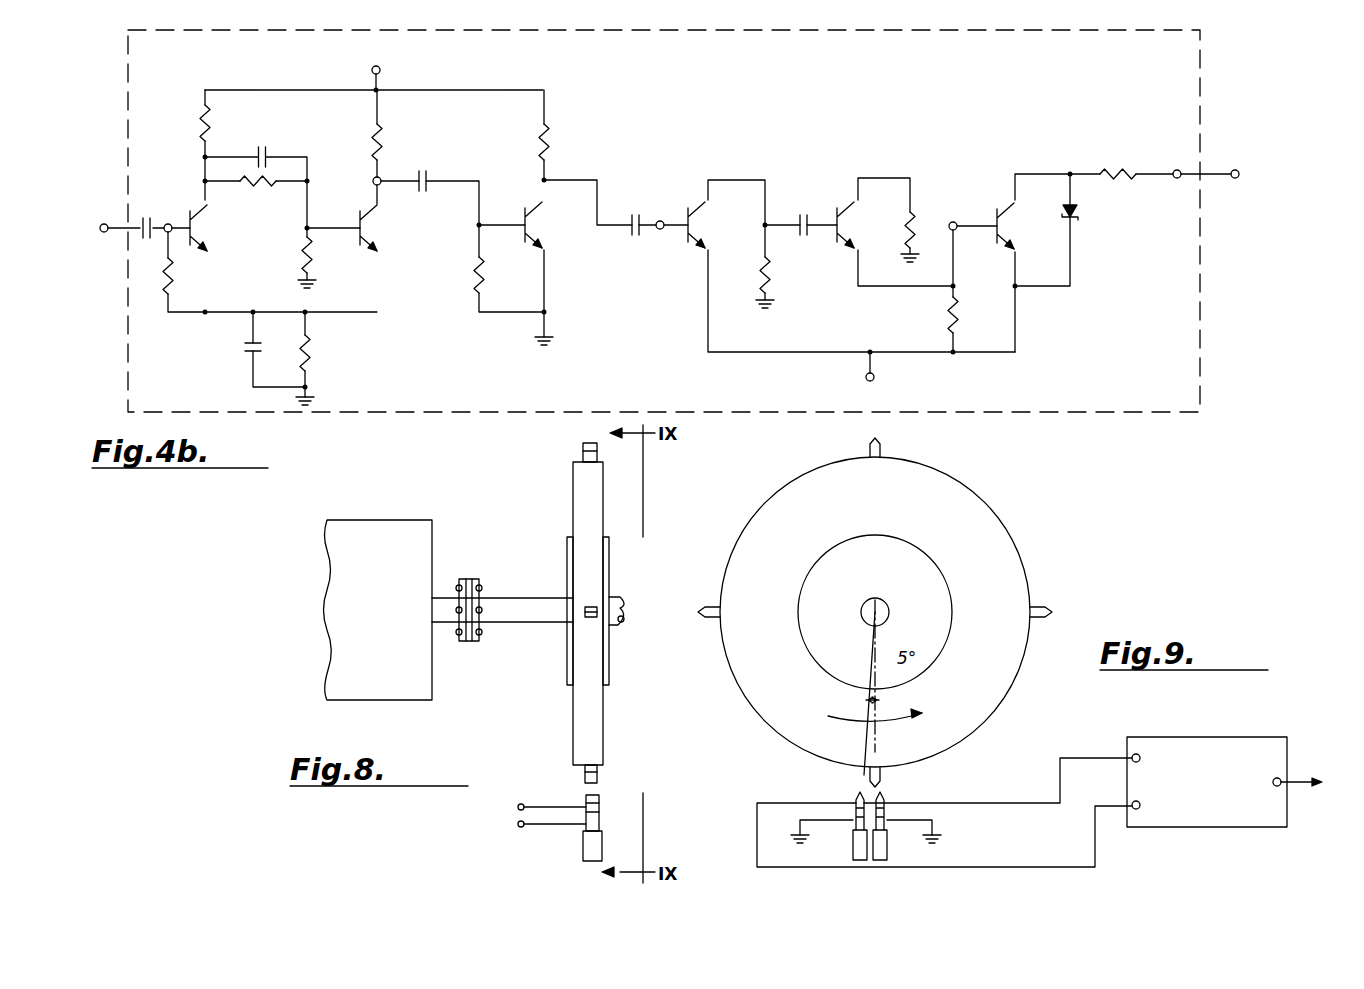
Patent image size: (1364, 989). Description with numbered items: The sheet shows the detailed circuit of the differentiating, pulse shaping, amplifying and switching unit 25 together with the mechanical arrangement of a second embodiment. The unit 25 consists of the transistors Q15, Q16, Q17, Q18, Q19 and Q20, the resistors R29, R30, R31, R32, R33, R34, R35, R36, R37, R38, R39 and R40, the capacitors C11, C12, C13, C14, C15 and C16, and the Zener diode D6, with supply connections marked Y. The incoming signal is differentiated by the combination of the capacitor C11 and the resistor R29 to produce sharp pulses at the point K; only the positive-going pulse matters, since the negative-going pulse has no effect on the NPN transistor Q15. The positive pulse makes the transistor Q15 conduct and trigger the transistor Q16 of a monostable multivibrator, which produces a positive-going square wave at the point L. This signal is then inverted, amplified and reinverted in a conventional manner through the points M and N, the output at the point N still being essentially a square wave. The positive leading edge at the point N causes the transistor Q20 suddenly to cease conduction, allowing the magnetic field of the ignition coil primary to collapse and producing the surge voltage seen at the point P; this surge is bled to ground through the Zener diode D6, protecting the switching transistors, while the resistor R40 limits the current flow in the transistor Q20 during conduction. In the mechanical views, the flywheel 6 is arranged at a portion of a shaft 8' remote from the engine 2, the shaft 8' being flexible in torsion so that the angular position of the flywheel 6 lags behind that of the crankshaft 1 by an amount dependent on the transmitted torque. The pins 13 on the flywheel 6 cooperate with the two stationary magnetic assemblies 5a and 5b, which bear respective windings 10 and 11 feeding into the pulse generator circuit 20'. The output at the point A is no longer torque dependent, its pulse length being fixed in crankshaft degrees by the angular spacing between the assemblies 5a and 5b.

In FIG. 4B, the differentiating, pulse shaping, amplifying and switching unit 25 is at (492, 412).
In FIG. 4B, the resistor R29 is at (162, 278).
In FIG. 4B, the resistor R30 is at (185, 115).
In FIG. 4B, the resistor R31 is at (256, 192).
In FIG. 4B, the resistor R32 is at (323, 262).
In FIG. 4B, the resistor R33 is at (322, 370).
In FIG. 4B, the resistor R34 is at (398, 141).
In FIG. 4B, the resistor R35 is at (460, 275).
In FIG. 4B, the resistor R36 is at (565, 142).
In FIG. 4B, the resistor R37 is at (782, 282).
In FIG. 4B, the resistor R38 is at (926, 229).
In FIG. 4B, the resistor R39 is at (931, 315).
In FIG. 4B, the resistor R40 is at (1118, 161).
In FIG. 4B, the capacitor C11 is at (149, 217).
In FIG. 4B, the capacitor C12 is at (269, 145).
In FIG. 4B, the capacitor C13 is at (233, 349).
In FIG. 4B, the capacitor C14 is at (429, 170).
In FIG. 4B, the capacitor C15 is at (631, 234).
In FIG. 4B, the capacitor C16 is at (803, 214).
In FIG. 4B, the NPN transistor Q15 is at (220, 228).
In FIG. 4B, the transistor Q16 is at (393, 228).
In FIG. 4B, the transistor Q17 is at (554, 273).
In FIG. 4B, the transistor Q18 is at (719, 225).
In FIG. 4B, the transistor Q19 is at (862, 225).
In FIG. 4B, the transistor Q20 is at (1027, 226).
In FIG. 4B, the Zener diode D6 is at (1088, 212).
In FIG. 4B, the point K is at (175, 216).
In FIG. 4B, the point L is at (373, 182).
In FIG. 4B, the point M is at (660, 220).
In FIG. 4B, the point N is at (957, 229).
In FIG. 4B, the point P is at (1174, 178).
In FIG. 4B, the supply terminal Y is at (635, 225).
In FIG. 8, the engine 2 is at (398, 530).
In FIG. 8, the crankshaft 1 is at (444, 600).
In FIG. 8, the shaft 8' is at (502, 587).
In FIG. 8, the flywheel 6 is at (575, 493).
In FIG. 9, the flywheel 6 is at (1000, 544).
In FIG. 8, the pins 13 is at (595, 608).
In FIG. 9, the pins 13 is at (700, 610).
In FIG. 8, the winding 10 is at (590, 802).
In FIG. 9, the winding 10 is at (856, 812).
In FIG. 9, the winding 11 is at (884, 800).
In FIG. 8, the stationary magnetic assembly 5a is at (583, 850).
In FIG. 9, the stationary magnetic assembly 5a is at (853, 850).
In FIG. 9, the stationary magnetic assembly 5b is at (880, 860).
In FIG. 9, the pulse generator circuit 20' is at (1215, 763).
In FIG. 9, the point A is at (1281, 780).